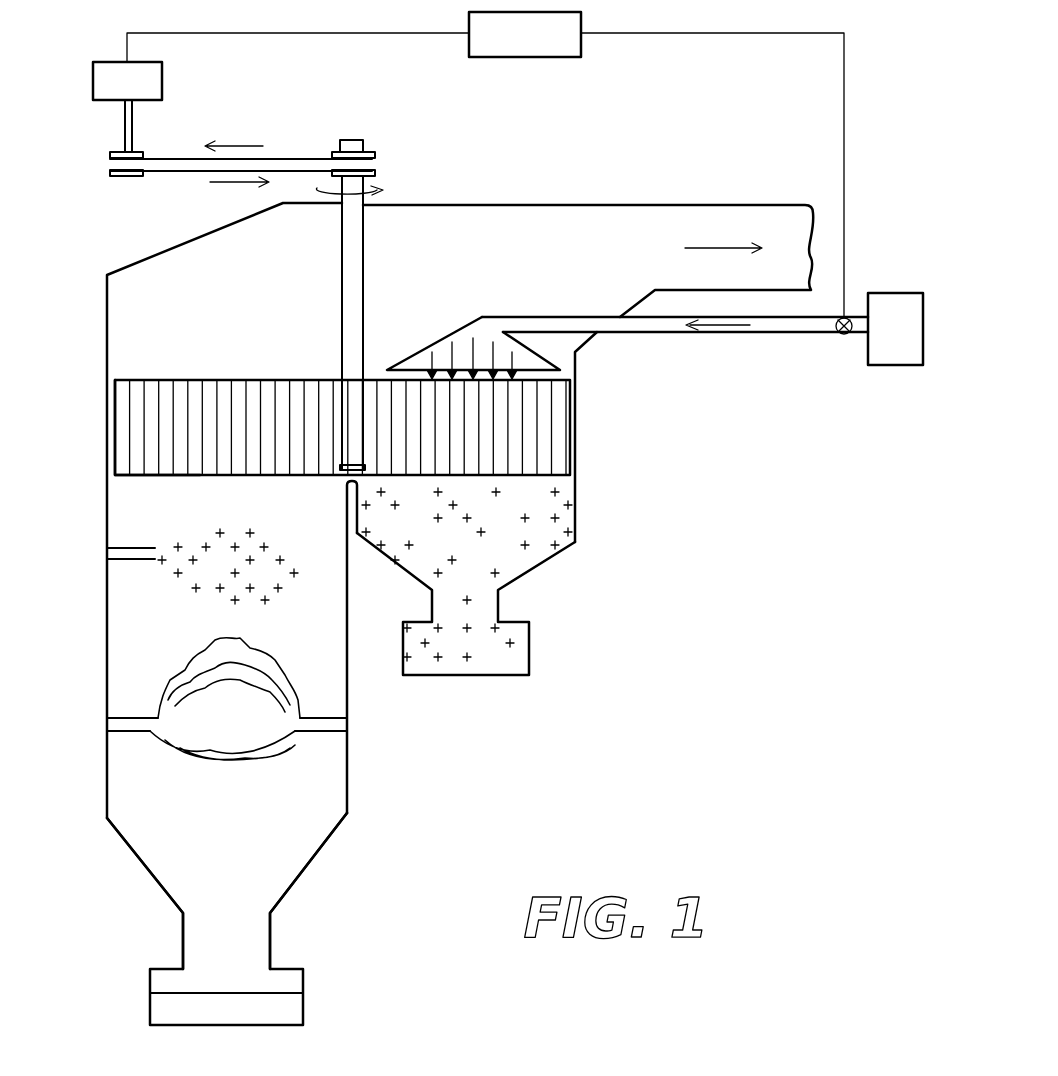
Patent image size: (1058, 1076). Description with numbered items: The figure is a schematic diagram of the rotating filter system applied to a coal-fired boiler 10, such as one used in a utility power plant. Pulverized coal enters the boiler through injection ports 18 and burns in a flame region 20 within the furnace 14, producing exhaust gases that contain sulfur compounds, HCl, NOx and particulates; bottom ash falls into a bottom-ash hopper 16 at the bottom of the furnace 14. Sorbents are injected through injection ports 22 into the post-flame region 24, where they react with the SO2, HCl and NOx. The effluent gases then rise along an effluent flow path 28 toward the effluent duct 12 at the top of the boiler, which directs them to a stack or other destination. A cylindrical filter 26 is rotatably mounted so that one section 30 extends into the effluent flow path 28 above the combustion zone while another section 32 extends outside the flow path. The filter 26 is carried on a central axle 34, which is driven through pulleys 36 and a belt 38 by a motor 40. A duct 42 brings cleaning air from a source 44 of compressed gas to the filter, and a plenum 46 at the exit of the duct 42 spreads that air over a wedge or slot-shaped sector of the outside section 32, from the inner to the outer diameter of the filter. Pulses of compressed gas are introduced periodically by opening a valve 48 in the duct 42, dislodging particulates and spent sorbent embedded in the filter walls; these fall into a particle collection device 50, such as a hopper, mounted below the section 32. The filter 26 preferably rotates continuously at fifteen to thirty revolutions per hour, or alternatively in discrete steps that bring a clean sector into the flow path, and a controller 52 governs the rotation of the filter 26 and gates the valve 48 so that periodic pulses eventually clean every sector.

The coal-fired boiler 10 is at (100, 295).
The effluent duct 12 is at (738, 228).
The furnace 14 is at (315, 692).
The bottom-ash hopper 16 is at (247, 895).
The injection ports 18 is at (128, 728).
The flame region 20 is at (213, 713).
The injection ports 22 is at (127, 559).
The post-flame region 24 is at (213, 570).
The filter 26 is at (137, 444).
The effluent flow path 28 is at (208, 512).
The section of the filter 30 is at (250, 390).
The section of the filter 32 is at (547, 432).
The central axle 34 is at (355, 265).
The pulleys 36 is at (372, 155).
The belt 38 is at (287, 160).
The motor 40 is at (113, 93).
The duct 42 is at (775, 325).
The source of compressed gas 44 is at (881, 341).
The plenum 46 is at (578, 352).
The valve 48 is at (838, 335).
The particle collection device 50 is at (495, 573).
The controller 52 is at (511, 47).